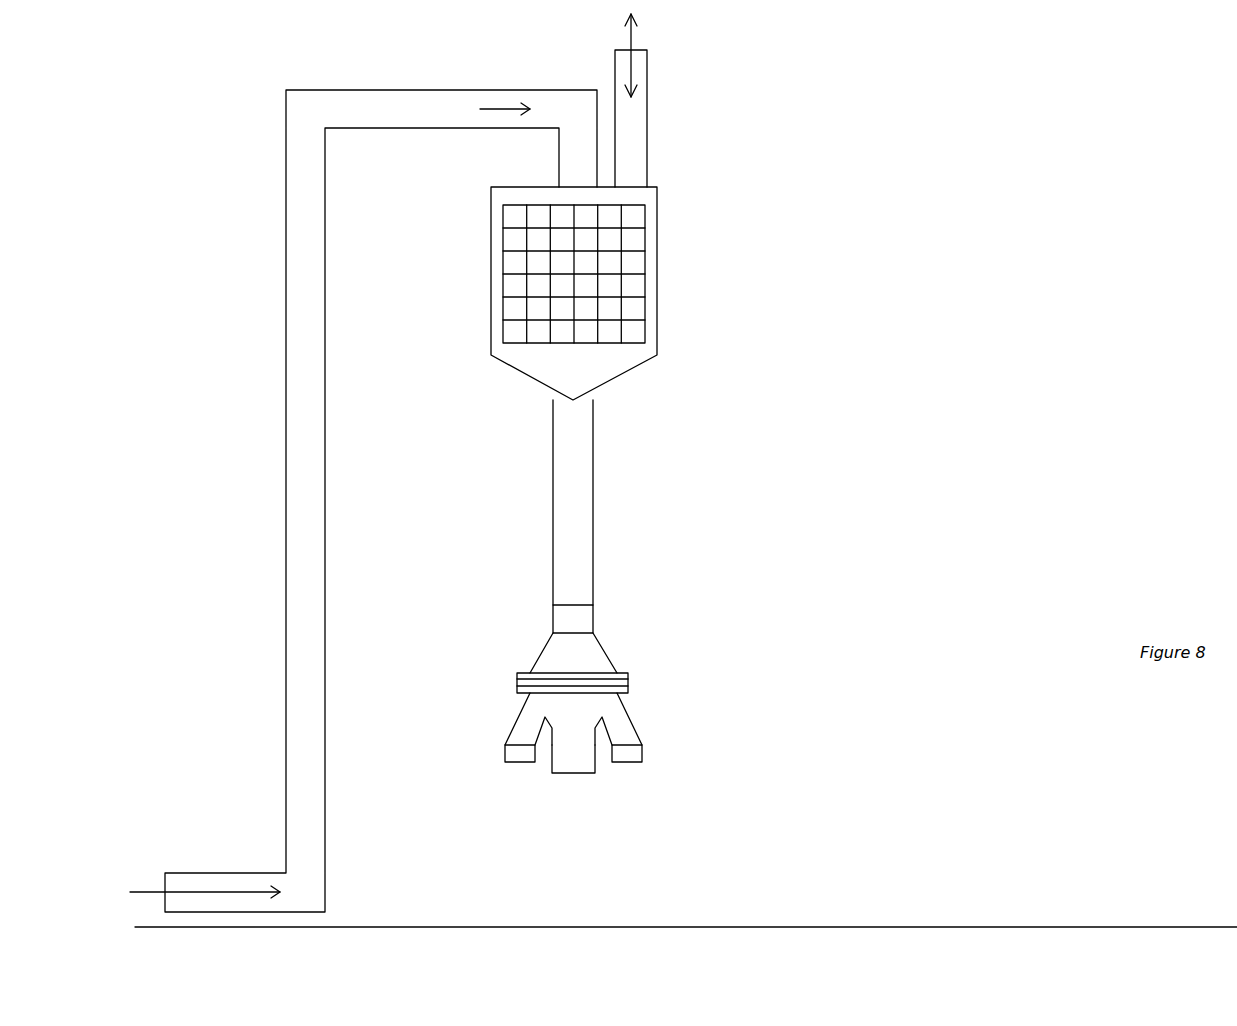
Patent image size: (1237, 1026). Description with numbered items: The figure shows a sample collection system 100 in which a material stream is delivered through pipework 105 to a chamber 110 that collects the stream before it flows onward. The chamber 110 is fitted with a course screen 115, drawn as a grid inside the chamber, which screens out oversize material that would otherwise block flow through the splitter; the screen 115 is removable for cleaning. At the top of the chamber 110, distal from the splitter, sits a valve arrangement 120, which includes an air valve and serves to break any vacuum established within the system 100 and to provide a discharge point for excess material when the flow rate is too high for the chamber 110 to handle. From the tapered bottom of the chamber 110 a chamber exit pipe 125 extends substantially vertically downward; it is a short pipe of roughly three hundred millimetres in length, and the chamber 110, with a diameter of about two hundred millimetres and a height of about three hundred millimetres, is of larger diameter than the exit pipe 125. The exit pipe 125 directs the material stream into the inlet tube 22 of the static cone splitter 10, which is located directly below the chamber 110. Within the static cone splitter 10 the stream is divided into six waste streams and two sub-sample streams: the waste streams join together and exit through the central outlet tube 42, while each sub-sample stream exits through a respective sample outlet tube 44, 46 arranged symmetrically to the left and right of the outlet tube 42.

The sample collection system 100 is at (863, 438).
The pipework 105 is at (438, 108).
The chamber 110 is at (659, 215).
The course screen 115 is at (631, 288).
The valve arrangement 120 is at (638, 128).
The chamber exit pipe 125 is at (583, 505).
The inlet tube 22 is at (582, 622).
The static cone splitter 10 is at (599, 728).
The outlet tube 42 is at (573, 765).
The sample outlet tube 44 is at (520, 755).
The sample outlet tube 46 is at (635, 757).